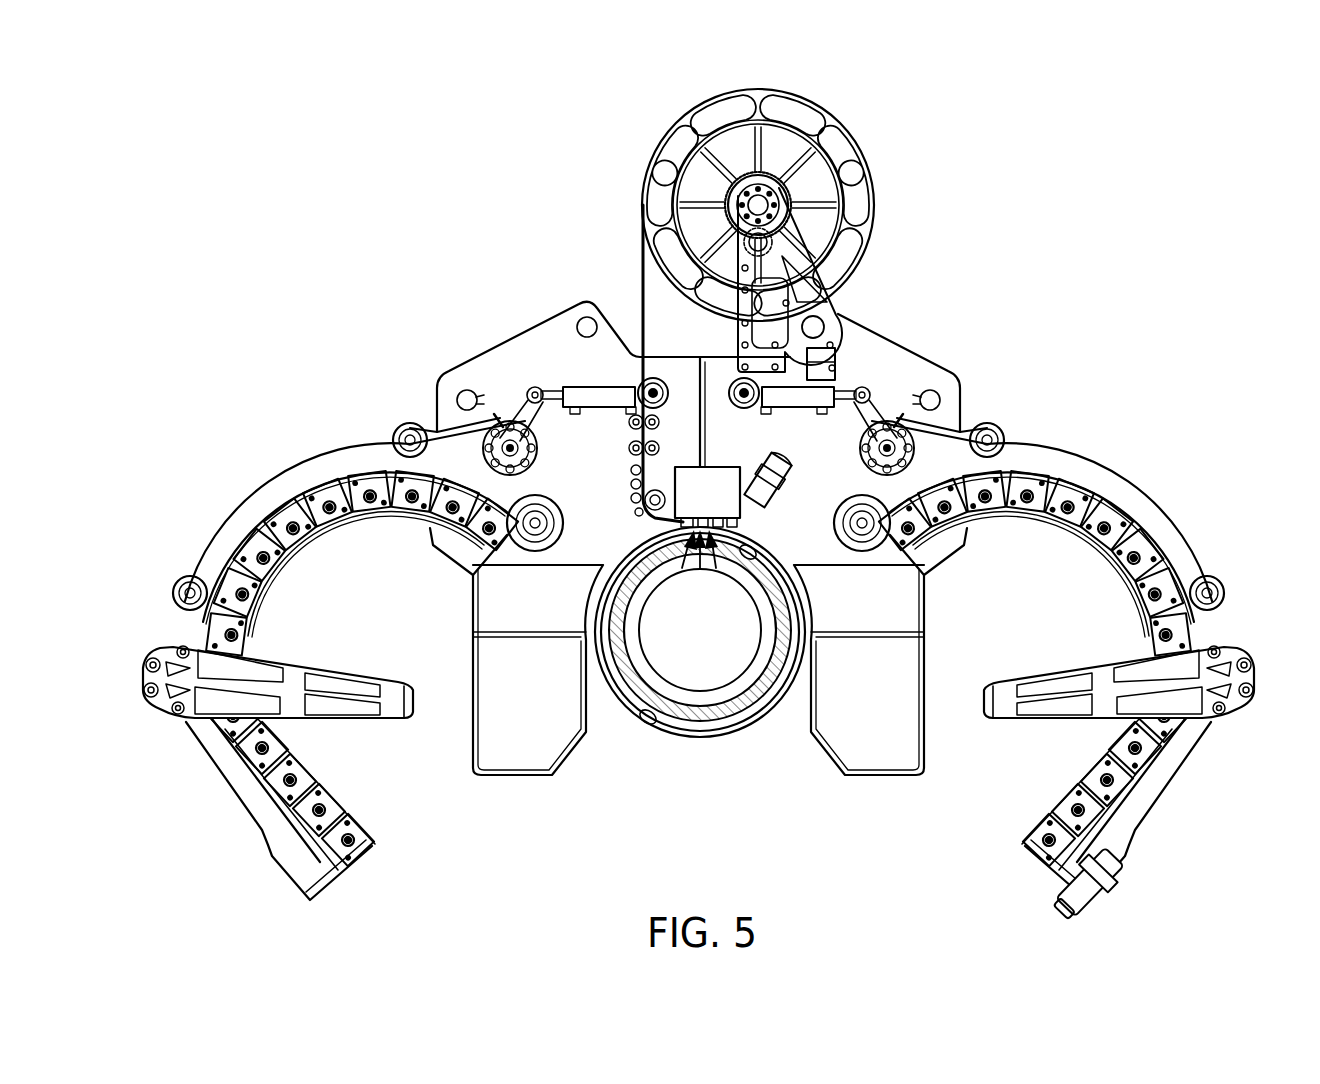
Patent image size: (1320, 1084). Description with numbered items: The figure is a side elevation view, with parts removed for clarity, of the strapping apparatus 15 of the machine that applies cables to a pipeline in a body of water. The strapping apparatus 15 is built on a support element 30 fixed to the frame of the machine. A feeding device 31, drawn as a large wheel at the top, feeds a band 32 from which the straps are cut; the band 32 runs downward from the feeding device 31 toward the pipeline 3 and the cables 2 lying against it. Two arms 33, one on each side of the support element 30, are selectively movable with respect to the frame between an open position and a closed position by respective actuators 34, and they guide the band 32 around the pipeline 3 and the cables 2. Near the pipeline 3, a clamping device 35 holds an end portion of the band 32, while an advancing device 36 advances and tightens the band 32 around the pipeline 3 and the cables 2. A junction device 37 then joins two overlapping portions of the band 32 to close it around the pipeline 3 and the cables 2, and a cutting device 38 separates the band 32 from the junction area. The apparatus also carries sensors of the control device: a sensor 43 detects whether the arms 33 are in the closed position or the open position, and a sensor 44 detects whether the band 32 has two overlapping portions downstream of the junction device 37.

The strapping apparatus 15 is at (395, 170).
The cable 2 is at (650, 726).
The pipeline 3 is at (722, 724).
The support element 30 is at (910, 365).
The feeding device 31 is at (762, 122).
The band 32 is at (643, 262).
The arms 33 is at (212, 752).
The actuators 34 is at (575, 392).
The clamping device 35 is at (688, 550).
The advancing device 36 is at (540, 392).
The junction device 37 is at (700, 548).
The cutting device 38 is at (718, 548).
The sensor 43 is at (1090, 880).
The sensor 44 is at (935, 432).